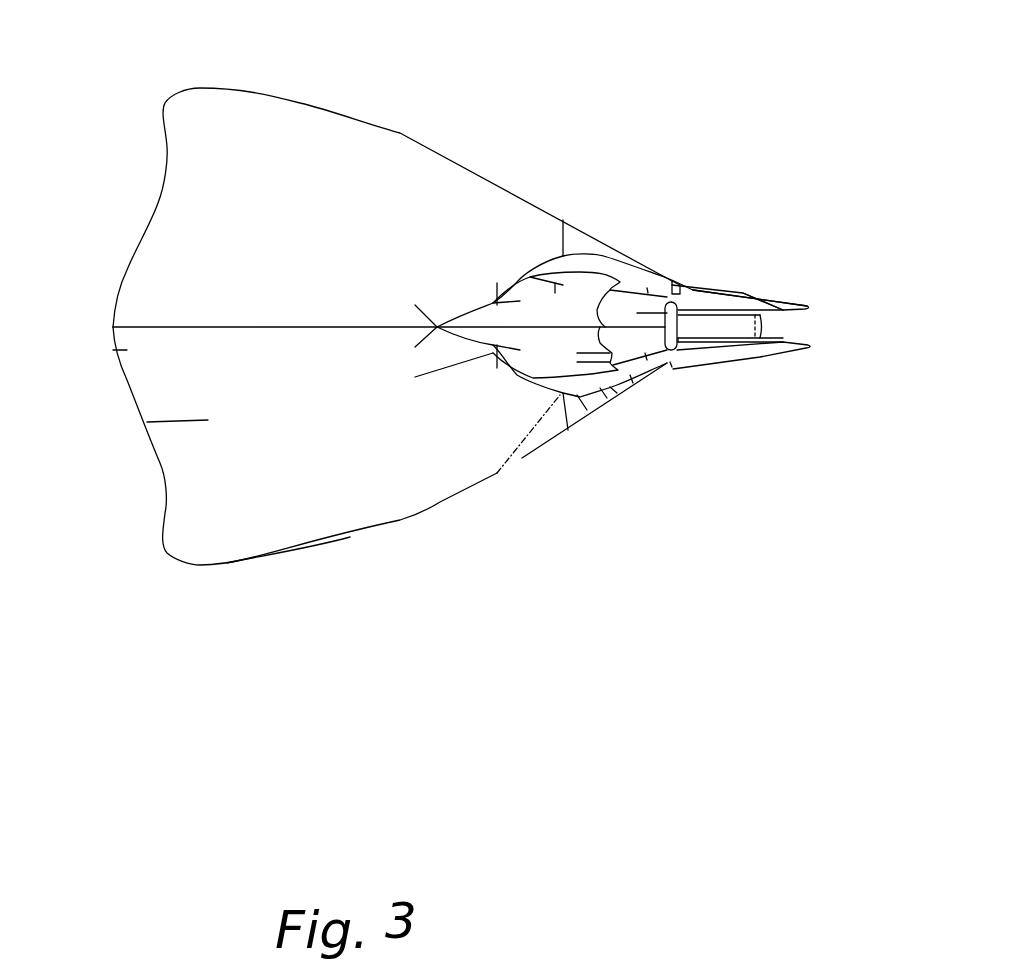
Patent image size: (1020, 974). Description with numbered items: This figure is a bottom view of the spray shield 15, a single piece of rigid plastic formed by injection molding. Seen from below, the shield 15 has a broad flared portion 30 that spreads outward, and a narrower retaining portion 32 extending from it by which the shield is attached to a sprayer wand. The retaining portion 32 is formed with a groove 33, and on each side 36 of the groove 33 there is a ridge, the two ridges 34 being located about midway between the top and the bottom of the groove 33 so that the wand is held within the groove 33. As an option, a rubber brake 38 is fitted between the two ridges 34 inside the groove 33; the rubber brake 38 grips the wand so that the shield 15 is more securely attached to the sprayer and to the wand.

The spray shield 15 is at (417, 125).
The flared portion 30 is at (160, 215).
The retaining portion 32 is at (700, 290).
The groove 33 is at (777, 320).
The ridges 34 is at (783, 337).
The side 36 is at (800, 307).
The rubber brake 38 is at (690, 323).